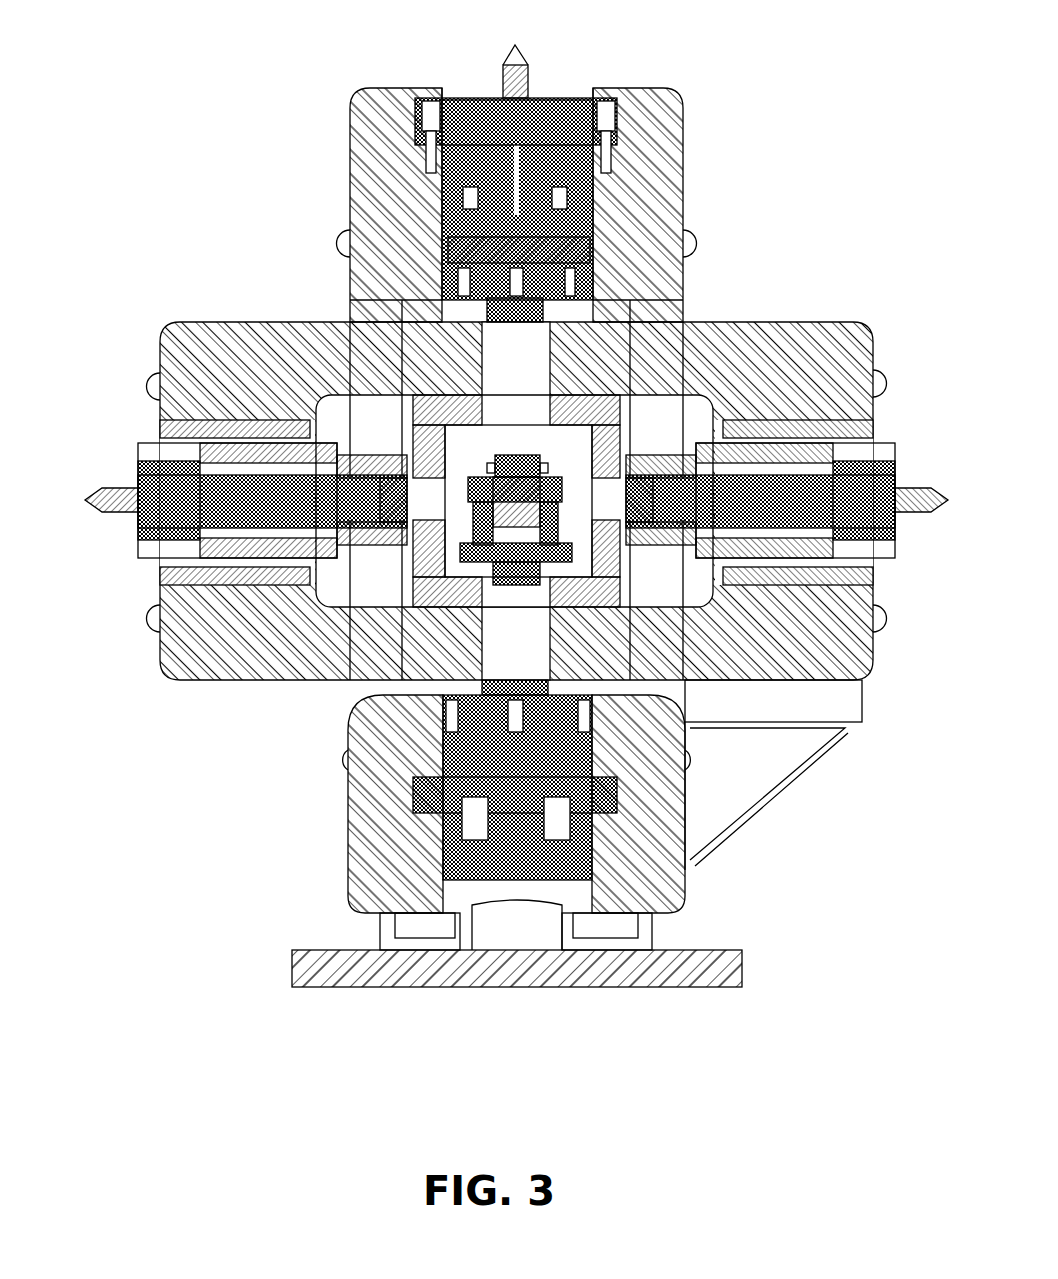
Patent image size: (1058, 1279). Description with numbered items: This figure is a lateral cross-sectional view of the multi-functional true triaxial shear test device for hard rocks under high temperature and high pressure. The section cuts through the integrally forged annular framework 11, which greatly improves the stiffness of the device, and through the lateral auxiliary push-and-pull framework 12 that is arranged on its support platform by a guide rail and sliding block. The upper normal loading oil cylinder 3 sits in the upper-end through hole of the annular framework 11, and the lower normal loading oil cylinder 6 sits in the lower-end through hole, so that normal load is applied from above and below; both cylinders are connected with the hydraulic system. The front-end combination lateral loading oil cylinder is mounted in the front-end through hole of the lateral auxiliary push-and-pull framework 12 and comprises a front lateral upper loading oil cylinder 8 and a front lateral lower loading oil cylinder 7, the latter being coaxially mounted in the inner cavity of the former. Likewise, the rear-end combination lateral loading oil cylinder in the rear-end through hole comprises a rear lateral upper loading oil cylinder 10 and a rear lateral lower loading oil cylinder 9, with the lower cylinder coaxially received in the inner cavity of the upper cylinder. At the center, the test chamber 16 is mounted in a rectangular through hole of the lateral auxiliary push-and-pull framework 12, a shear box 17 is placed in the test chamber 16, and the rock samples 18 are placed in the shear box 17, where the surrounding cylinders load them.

The upper normal loading oil cylinder 3 is at (458, 102).
The lower normal loading oil cylinder 6 is at (598, 822).
The front lateral lower loading oil cylinder 7 is at (137, 475).
The front lateral upper loading oil cylinder 8 is at (160, 433).
The rear lateral lower loading oil cylinder 9 is at (893, 463).
The rear lateral upper loading oil cylinder 10 is at (813, 440).
The annular framework 11 is at (390, 118).
The lateral auxiliary push-and-pull framework 12 is at (780, 360).
The test chamber 16 is at (355, 398).
The shear box 17 is at (545, 462).
The rock samples 18 is at (560, 548).